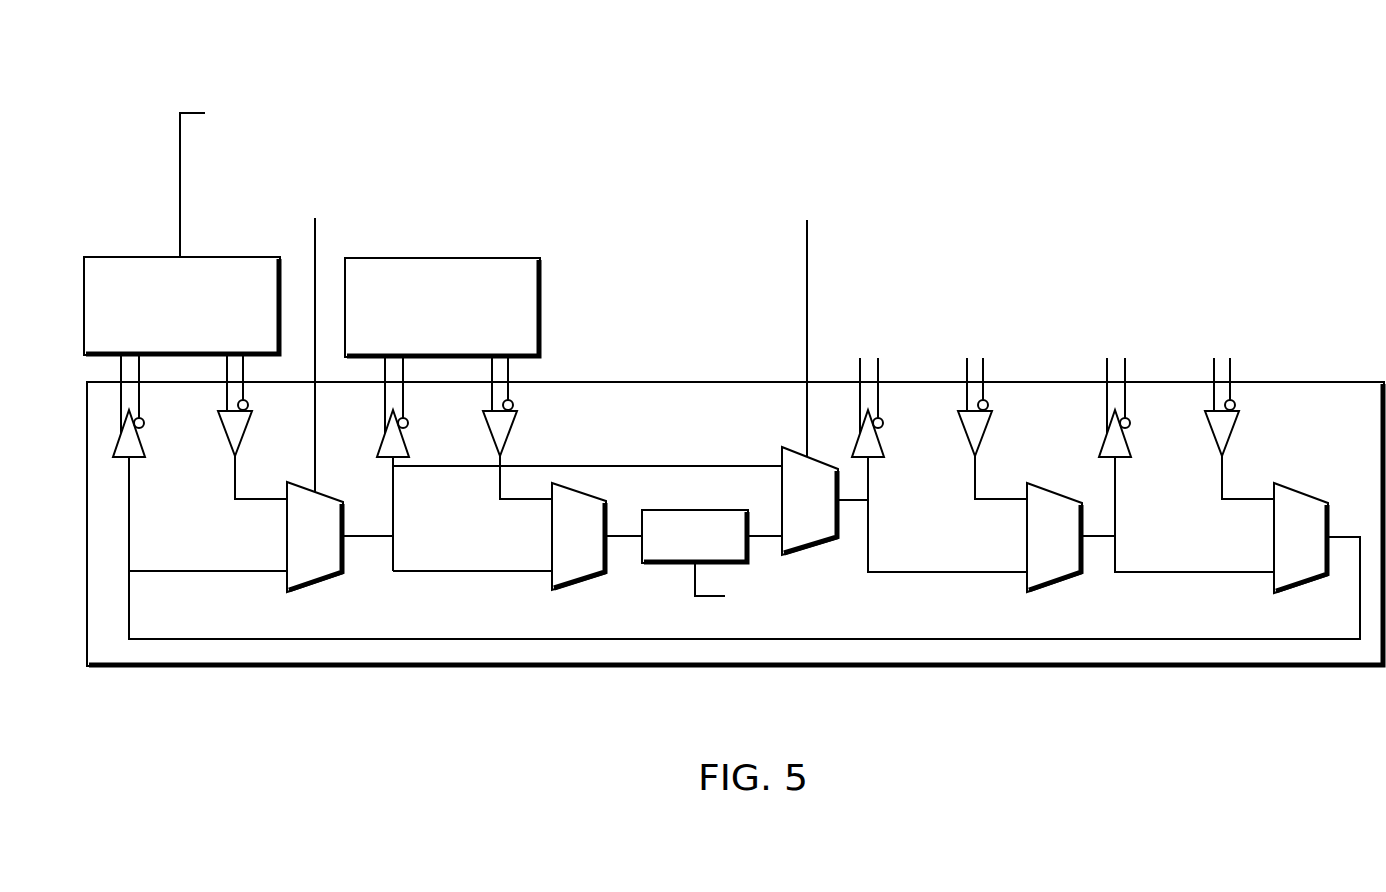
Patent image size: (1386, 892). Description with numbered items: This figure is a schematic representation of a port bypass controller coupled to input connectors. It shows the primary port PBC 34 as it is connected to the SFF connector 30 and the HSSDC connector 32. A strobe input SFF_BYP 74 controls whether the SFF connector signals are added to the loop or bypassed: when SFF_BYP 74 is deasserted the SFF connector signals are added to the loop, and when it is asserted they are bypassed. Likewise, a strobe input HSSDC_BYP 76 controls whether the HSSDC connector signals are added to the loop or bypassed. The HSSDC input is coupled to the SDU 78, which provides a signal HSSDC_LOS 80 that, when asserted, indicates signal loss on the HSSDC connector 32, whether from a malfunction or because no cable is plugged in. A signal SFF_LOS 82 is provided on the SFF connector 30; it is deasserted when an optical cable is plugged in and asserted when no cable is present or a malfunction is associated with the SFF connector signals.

The SFF connector 30 is at (126, 256).
The HSSDC connector 32 is at (388, 256).
The primary port PBC 34 is at (684, 669).
The SFF_BYP strobe input 74 is at (313, 182).
The HSSDC_BYP strobe input 76 is at (807, 183).
The SDU 78 is at (679, 506).
The HSSDC_LOS signal 80 is at (848, 614).
The SFF_LOS signal 82 is at (262, 98).